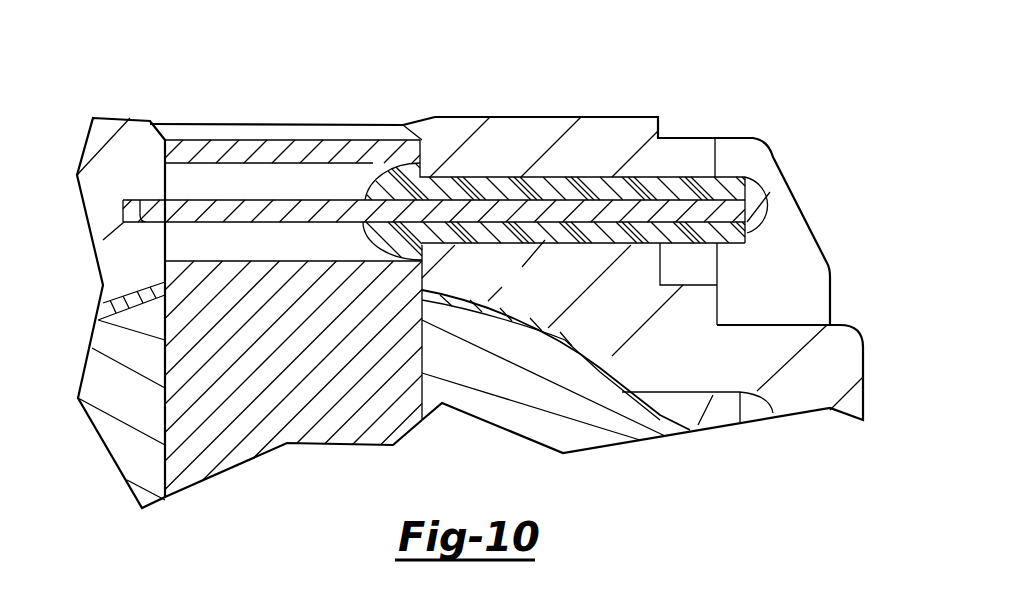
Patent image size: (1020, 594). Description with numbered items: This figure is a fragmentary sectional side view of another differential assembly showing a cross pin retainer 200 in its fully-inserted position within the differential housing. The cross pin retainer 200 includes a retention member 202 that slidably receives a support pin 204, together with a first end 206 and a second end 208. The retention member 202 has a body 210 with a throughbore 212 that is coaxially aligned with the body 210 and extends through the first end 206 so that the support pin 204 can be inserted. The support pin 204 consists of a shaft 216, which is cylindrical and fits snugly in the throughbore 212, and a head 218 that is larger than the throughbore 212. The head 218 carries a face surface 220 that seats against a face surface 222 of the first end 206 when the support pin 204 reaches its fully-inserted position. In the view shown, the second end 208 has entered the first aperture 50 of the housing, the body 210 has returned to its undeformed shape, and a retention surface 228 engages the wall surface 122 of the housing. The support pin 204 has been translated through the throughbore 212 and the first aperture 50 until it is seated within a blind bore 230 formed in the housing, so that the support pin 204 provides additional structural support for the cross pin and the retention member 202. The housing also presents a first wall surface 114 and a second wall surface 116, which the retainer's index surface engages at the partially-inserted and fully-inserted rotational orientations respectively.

The first aperture 50 is at (167, 188).
The shaft 216 is at (247, 198).
The blind bore 230 is at (132, 202).
The second end 208 is at (374, 185).
The wall surface 122 is at (411, 161).
The throughbore 212 is at (543, 197).
The cross pin retainer 200 is at (522, 113).
The body 210 is at (624, 178).
The retention member 202 is at (696, 178).
The first end 206 is at (722, 178).
The face surface 220 is at (736, 176).
The support pin 204 is at (772, 188).
The head 218 is at (778, 203).
The face surface 222 is at (748, 234).
The second wall surface 116 is at (663, 269).
The first wall surface 114 is at (718, 305).
The retention surface 228 is at (424, 248).